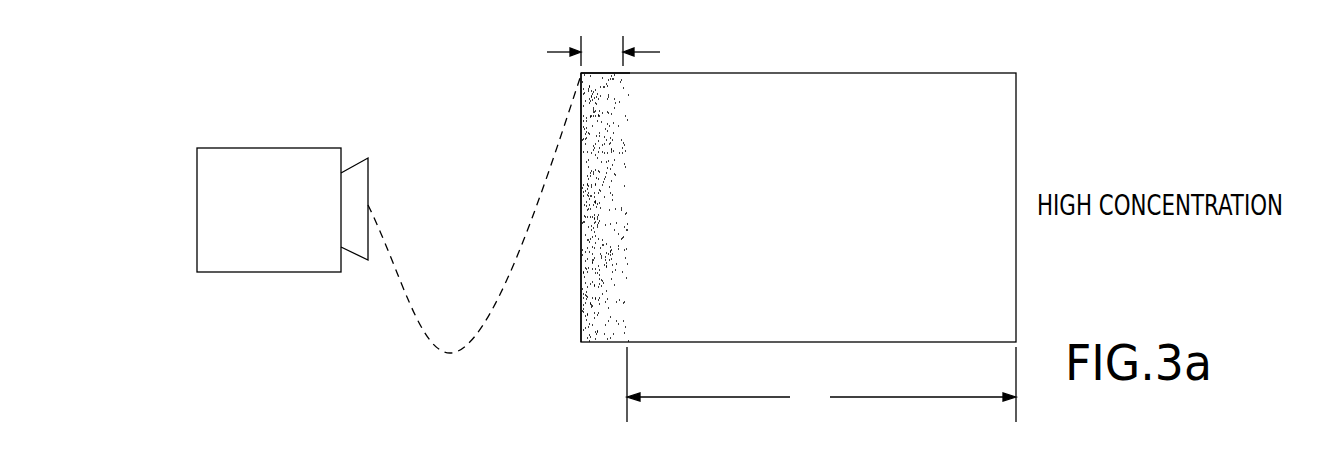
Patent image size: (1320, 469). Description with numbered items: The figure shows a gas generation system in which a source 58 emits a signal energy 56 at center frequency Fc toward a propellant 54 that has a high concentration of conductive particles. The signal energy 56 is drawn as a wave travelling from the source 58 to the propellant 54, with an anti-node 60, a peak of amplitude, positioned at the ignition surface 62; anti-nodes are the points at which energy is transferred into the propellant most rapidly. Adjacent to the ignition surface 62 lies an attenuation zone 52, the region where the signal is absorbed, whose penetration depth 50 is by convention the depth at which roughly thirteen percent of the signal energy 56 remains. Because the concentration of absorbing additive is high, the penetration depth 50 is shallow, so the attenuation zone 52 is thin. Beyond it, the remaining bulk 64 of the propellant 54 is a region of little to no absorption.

The penetration depth 50 is at (603, 52).
The attenuation zone 52 is at (582, 349).
The propellant 54 is at (818, 242).
The signal energy 56 is at (524, 222).
The source 58 is at (197, 180).
The anti-node 60 is at (602, 73).
The ignition surface 62 is at (573, 284).
The remaining bulk 64 is at (821, 384).